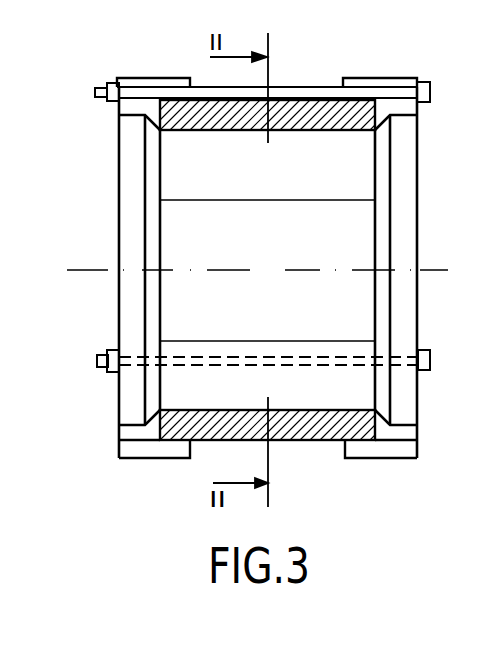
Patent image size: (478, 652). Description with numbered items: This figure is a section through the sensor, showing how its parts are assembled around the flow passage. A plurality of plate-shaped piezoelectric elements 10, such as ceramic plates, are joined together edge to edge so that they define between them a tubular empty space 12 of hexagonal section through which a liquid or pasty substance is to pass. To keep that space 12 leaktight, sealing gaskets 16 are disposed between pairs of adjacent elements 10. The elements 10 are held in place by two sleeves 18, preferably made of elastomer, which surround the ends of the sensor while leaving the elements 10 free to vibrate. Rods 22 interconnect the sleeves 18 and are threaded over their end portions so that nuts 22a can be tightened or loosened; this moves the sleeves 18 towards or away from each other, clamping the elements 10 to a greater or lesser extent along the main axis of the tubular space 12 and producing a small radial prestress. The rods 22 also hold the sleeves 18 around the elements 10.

The piezoelectric element 10 is at (360, 166).
The tubular empty space 12 is at (279, 283).
The sealing gasket 16 is at (218, 127).
The sleeve 18 is at (152, 78).
The rod 22 is at (305, 90).
The nut 22a is at (110, 86).